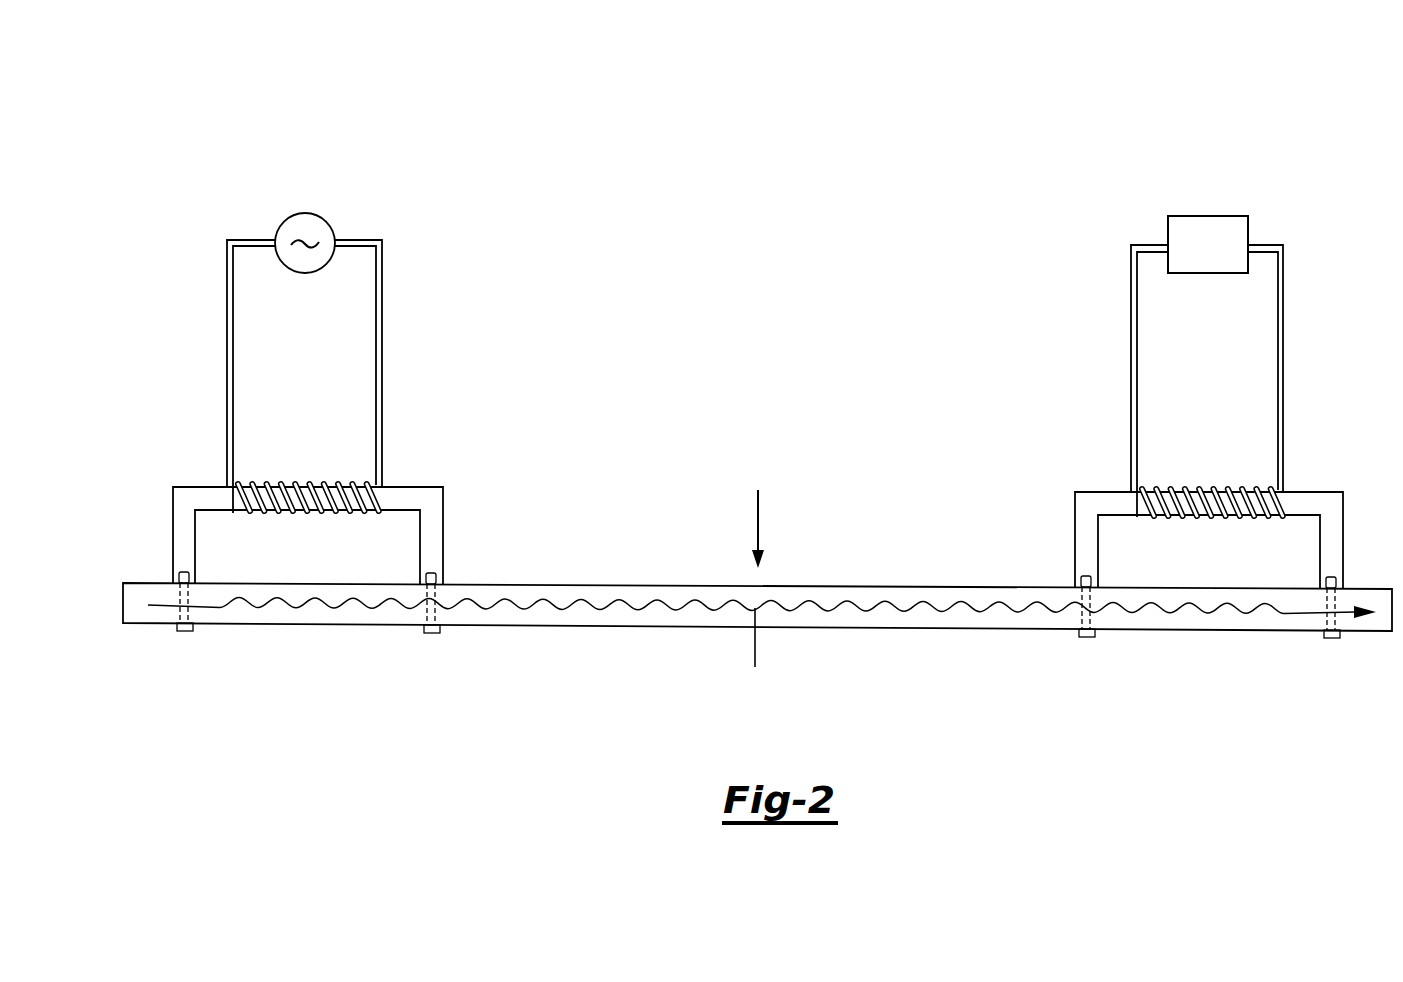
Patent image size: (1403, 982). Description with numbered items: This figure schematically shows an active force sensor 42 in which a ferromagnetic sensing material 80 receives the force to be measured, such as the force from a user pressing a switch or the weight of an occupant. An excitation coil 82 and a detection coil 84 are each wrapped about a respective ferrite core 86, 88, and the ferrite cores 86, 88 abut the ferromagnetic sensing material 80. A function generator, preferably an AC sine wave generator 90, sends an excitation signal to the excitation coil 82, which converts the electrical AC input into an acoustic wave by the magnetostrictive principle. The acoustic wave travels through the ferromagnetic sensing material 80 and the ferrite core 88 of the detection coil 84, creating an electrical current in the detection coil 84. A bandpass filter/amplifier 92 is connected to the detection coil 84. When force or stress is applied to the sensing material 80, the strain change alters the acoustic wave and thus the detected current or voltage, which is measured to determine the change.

The force sensor 42 is at (365, 98).
The ferromagnetic sensing material 80 is at (870, 570).
The excitation coil 82 is at (227, 392).
The detection coil 84 is at (1131, 368).
The ferrite core 86 is at (173, 537).
The ferrite core 88 is at (1075, 545).
The AC sine wave generator 90 is at (309, 213).
The bandpass filter/amplifier 92 is at (1249, 237).